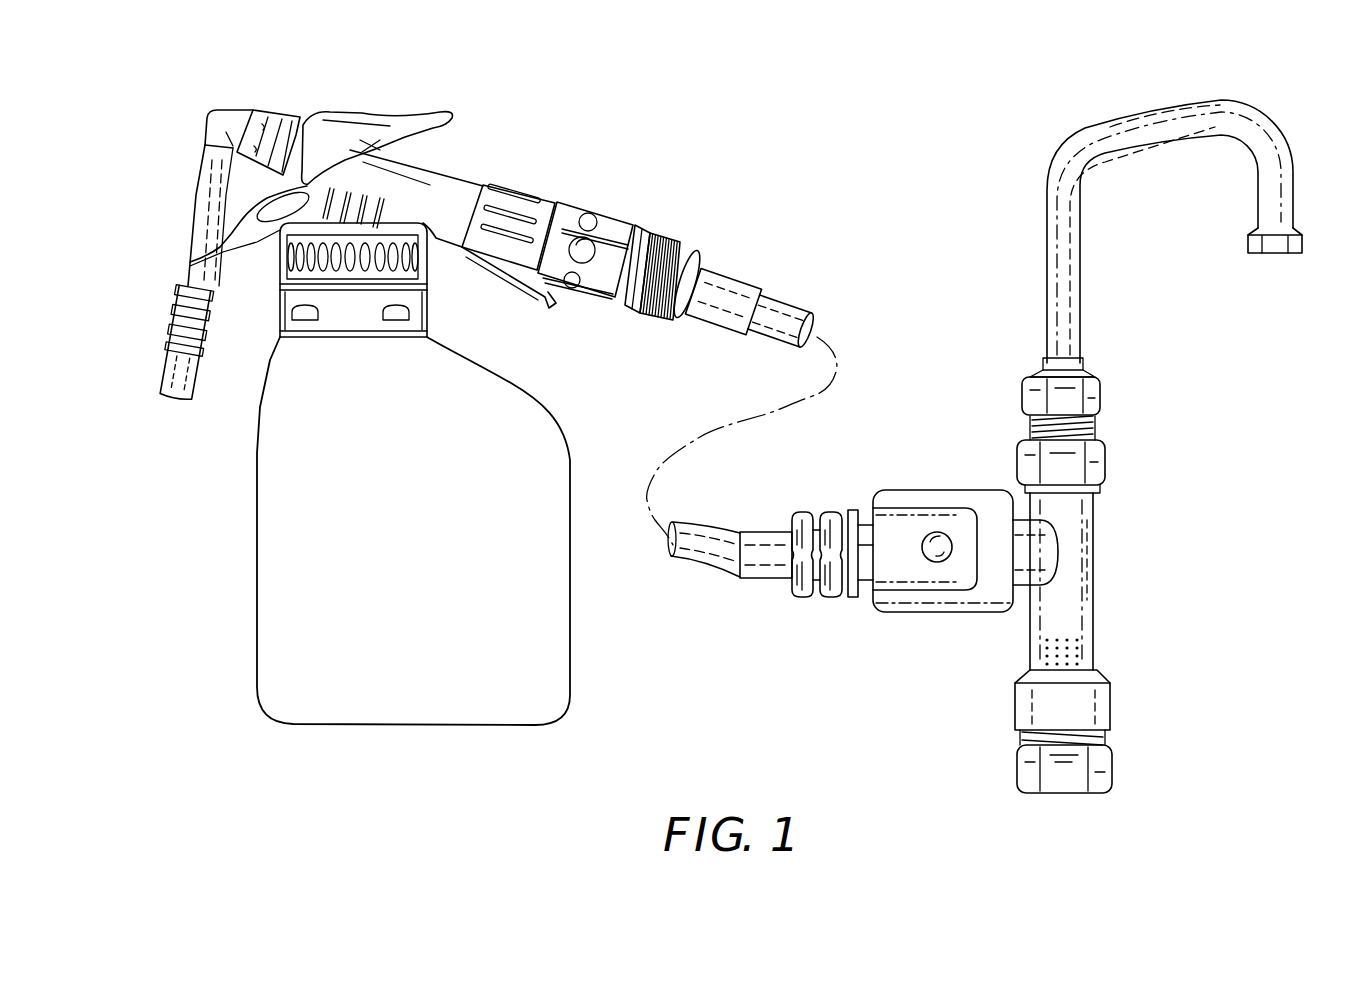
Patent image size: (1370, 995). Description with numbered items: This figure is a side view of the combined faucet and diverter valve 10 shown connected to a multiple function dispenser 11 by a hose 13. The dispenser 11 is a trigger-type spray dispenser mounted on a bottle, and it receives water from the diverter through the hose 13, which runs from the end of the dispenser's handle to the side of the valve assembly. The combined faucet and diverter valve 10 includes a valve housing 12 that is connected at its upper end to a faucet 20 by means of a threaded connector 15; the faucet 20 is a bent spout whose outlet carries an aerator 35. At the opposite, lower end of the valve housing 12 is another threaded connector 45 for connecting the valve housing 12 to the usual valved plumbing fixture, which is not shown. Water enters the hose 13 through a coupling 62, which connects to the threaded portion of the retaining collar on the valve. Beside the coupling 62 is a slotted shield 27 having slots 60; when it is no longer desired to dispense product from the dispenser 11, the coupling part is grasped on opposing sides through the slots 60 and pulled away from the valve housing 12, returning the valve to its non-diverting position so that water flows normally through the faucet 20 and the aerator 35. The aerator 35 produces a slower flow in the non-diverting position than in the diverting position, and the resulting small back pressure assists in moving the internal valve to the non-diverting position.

The combined faucet and diverter valve 10 is at (997, 453).
The multiple function dispenser 11 is at (496, 178).
The valve housing 12 is at (1097, 573).
The hose 13 is at (762, 288).
The threaded connector 15 is at (1097, 393).
The faucet 20 is at (1162, 107).
The slotted shield 27 is at (902, 610).
The aerator 35 is at (1287, 258).
The threaded connector 45 is at (1097, 772).
The slots 60 is at (933, 588).
The coupling 62 is at (813, 512).